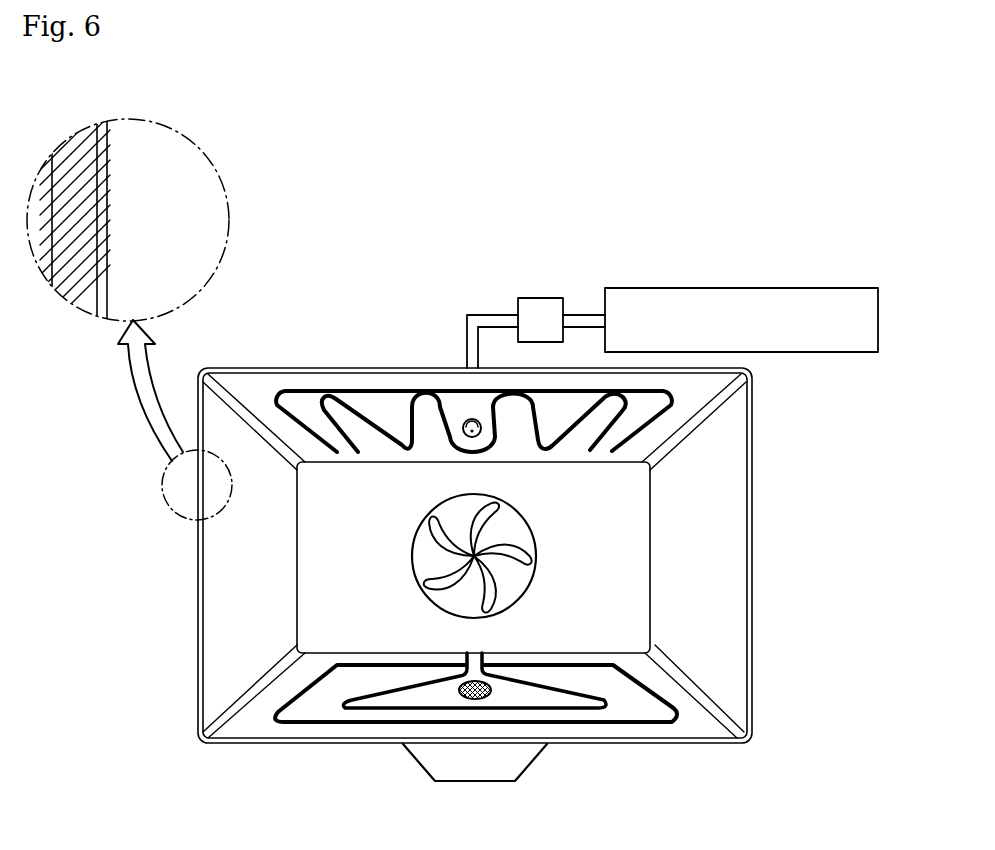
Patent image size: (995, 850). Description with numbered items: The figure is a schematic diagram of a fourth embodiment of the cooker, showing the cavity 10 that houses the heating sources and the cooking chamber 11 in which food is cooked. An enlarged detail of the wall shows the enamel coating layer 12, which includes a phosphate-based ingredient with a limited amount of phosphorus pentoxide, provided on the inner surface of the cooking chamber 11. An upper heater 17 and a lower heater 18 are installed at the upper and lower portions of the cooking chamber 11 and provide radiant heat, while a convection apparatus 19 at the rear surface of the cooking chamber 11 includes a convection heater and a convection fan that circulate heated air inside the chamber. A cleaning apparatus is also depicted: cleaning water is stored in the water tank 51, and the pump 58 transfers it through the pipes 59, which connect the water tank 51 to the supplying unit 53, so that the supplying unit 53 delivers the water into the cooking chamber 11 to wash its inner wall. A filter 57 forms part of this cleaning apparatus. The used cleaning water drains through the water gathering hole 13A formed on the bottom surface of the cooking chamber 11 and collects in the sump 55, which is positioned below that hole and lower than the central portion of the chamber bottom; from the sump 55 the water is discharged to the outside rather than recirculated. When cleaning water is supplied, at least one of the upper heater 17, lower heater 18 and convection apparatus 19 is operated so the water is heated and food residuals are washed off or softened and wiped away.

The cavity 10 is at (77, 293).
The cooking chamber 11 is at (185, 220).
The enamel coating layer 12 is at (102, 160).
The upper heater 17 is at (395, 389).
The lower heater 18 is at (605, 724).
The convection apparatus 19 is at (565, 542).
The water gathering hole 13A is at (460, 690).
The water tank 51 is at (743, 287).
The supplying unit 53 is at (465, 421).
The sump 55 is at (473, 776).
The filter 57 is at (478, 680).
The pump 58 is at (540, 297).
The pipes 59 is at (493, 314).